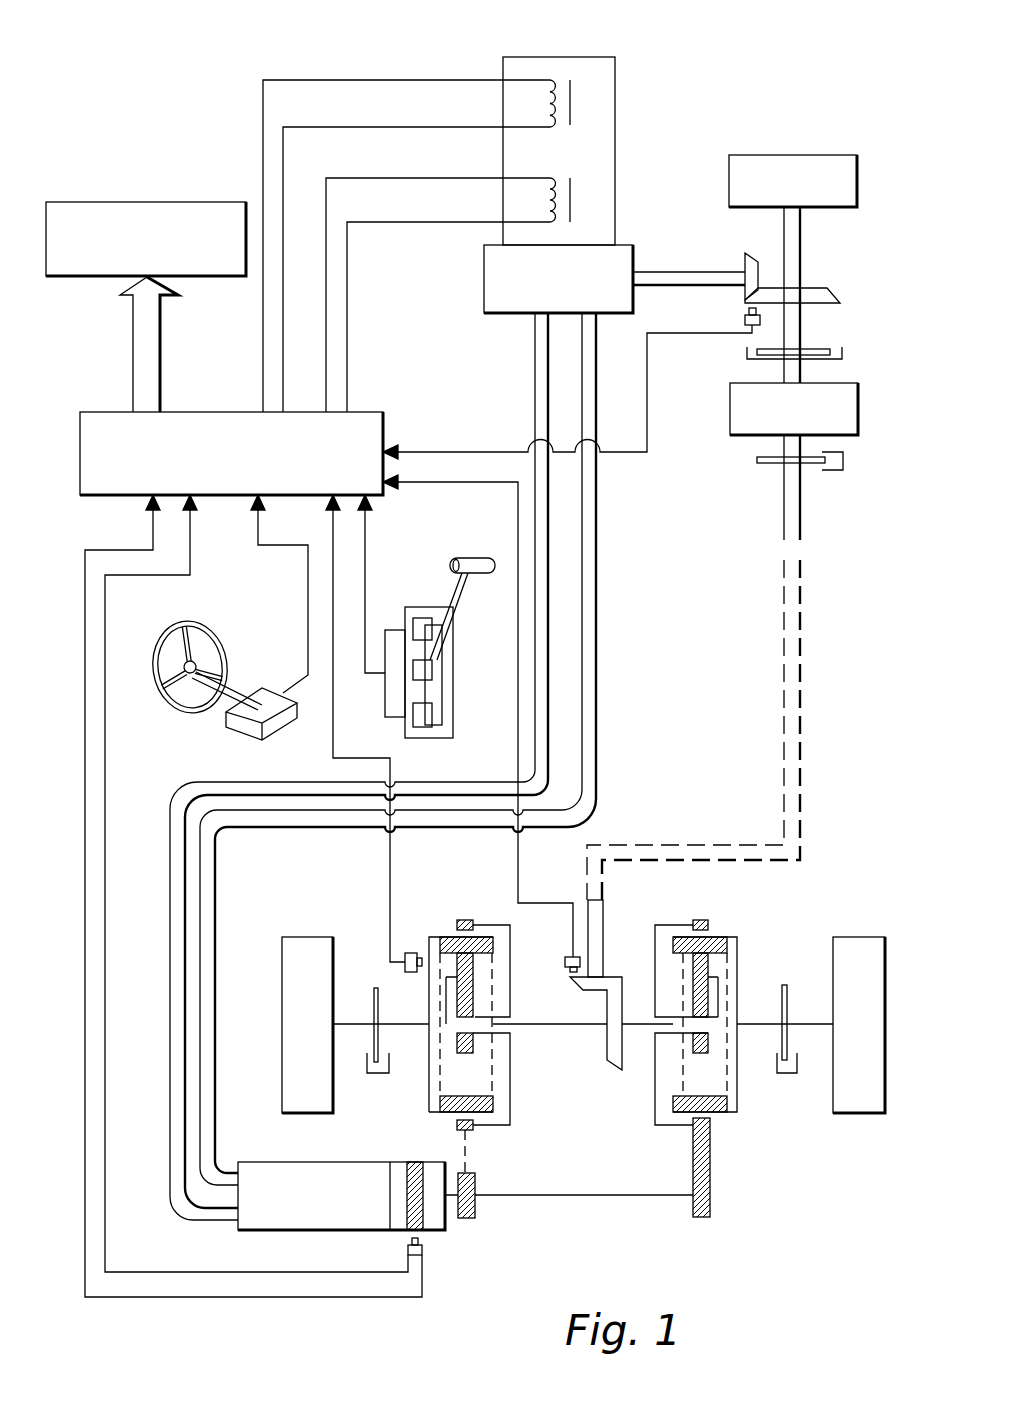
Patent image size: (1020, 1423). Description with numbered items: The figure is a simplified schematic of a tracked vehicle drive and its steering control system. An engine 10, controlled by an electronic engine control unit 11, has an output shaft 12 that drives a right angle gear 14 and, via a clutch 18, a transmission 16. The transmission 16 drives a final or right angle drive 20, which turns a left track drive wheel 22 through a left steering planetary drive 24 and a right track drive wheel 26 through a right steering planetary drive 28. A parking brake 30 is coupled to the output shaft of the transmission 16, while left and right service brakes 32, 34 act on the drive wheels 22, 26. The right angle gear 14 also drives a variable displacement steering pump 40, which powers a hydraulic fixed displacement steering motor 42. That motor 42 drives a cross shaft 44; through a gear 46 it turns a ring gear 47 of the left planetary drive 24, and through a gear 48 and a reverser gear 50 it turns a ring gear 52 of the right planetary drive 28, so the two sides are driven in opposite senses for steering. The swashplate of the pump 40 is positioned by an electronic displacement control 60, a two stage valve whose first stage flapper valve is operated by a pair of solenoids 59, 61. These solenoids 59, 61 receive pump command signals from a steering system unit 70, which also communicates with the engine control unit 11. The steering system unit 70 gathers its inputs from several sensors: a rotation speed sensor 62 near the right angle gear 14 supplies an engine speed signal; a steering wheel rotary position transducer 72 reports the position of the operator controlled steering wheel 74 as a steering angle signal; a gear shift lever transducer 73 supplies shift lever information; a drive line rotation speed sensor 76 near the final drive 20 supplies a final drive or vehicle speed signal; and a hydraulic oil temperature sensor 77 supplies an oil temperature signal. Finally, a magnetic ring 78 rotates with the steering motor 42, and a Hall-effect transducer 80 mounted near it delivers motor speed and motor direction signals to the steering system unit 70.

The engine 10 is at (729, 182).
The electronic engine control unit 11 is at (198, 202).
The output shaft 12 is at (802, 240).
The right angle gear 14 is at (840, 297).
The transmission 16 is at (730, 412).
The clutch 18 is at (842, 354).
The final drive 20 is at (619, 954).
The left track drive wheel 22 is at (330, 937).
The left steering planetary drive 24 is at (447, 915).
The right track drive wheel 26 is at (878, 937).
The right steering planetary drive 28 is at (757, 900).
The parking brake 30 is at (824, 500).
The left service brake 32 is at (370, 1090).
The right service brake 34 is at (791, 1090).
The variable displacement steering pump 40 is at (633, 258).
The steering motor 42 is at (348, 1232).
The cross shaft 44 is at (582, 1198).
The gear 46 is at (478, 1183).
The ring gear 47 is at (475, 1125).
The gear 48 is at (712, 1202).
The reverser gear 50 is at (693, 1145).
The ring gear 52 is at (712, 1122).
The solenoid 59 is at (537, 80).
The electronic displacement control 60 is at (634, 73).
The solenoid 61 is at (540, 225).
The rotation speed sensor 62 is at (760, 320).
The steering system unit 70 is at (383, 400).
The steering wheel rotary position transducer 72 is at (272, 738).
The gear shift lever transducer 73 is at (396, 606).
The steering wheel 74 is at (225, 642).
The drive line rotation speed sensor 76 is at (565, 962).
The hydraulic oil temperature sensor 77 is at (410, 953).
The magnetic ring 78 is at (415, 1162).
The Hall-effect transducer 80 is at (423, 1250).